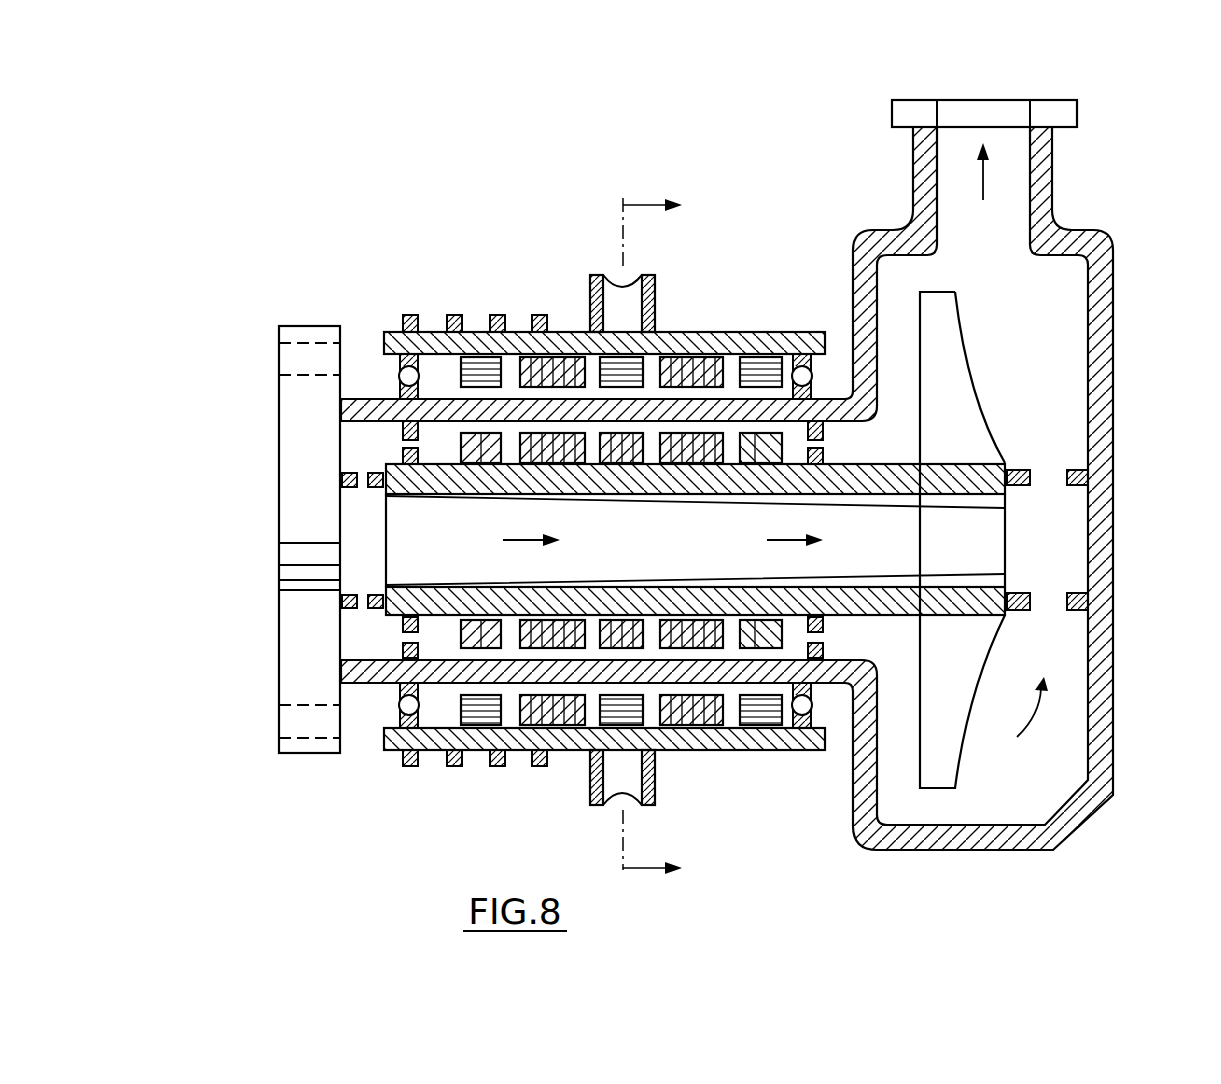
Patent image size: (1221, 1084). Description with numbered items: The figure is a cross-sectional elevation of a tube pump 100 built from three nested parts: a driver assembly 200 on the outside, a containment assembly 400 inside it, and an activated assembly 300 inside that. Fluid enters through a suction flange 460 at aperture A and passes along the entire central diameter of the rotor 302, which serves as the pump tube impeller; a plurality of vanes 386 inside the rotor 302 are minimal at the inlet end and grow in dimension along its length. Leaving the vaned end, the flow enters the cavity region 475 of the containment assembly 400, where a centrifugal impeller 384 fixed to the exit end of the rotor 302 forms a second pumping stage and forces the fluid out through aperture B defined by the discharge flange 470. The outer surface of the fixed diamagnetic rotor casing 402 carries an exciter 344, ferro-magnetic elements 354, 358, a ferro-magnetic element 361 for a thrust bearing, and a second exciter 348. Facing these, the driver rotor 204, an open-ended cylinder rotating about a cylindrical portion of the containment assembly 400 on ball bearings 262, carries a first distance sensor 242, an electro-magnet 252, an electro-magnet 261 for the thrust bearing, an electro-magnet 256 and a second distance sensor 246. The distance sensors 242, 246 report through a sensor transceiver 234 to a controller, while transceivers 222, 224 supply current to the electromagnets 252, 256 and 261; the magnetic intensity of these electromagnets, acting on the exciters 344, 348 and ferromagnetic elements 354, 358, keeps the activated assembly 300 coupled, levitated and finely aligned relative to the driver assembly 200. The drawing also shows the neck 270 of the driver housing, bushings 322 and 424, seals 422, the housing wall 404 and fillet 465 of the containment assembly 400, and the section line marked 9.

The tube pump 100 is at (742, 892).
The driver assembly 200 is at (565, 773).
The driver rotor 204 is at (386, 735).
The transceiver 222 is at (412, 332).
The transceiver 224 is at (453, 332).
The sensor transceiver 234 is at (533, 330).
The first distance sensor 242 is at (480, 330).
The second distance sensor 246 is at (745, 345).
The electro-magnet 252 is at (567, 332).
The electro-magnet 256 is at (700, 360).
The electro-magnet for a thrust bearing 261 is at (625, 372).
The ball bearings 262 is at (397, 372).
The motor housing neck 270 is at (593, 277).
The activated assembly 300 is at (985, 359).
The rotor 302 is at (883, 603).
The bushing 322 is at (402, 455).
The exciter 344 is at (485, 452).
The exciter 348 is at (773, 463).
The ferro-magnetic element 354 is at (567, 457).
The ferro-magnetic element 358 is at (693, 450).
The ferro-magnetic element for a thrust bearing 361 is at (622, 450).
The centrifugal impeller 384 is at (948, 735).
The vanes 386 is at (988, 580).
The containment assembly 400 is at (985, 866).
The rotor casing 402 is at (382, 680).
The housing wall 404 is at (730, 660).
The seal 422 is at (343, 480).
The bearing bushing 424 is at (402, 428).
The suction flange 460 is at (318, 716).
The housing fillet 465 is at (857, 640).
The discharge flange 470 is at (1068, 120).
The cavity region 475 is at (1040, 402).
The section line 9- 9 is at (664, 536).